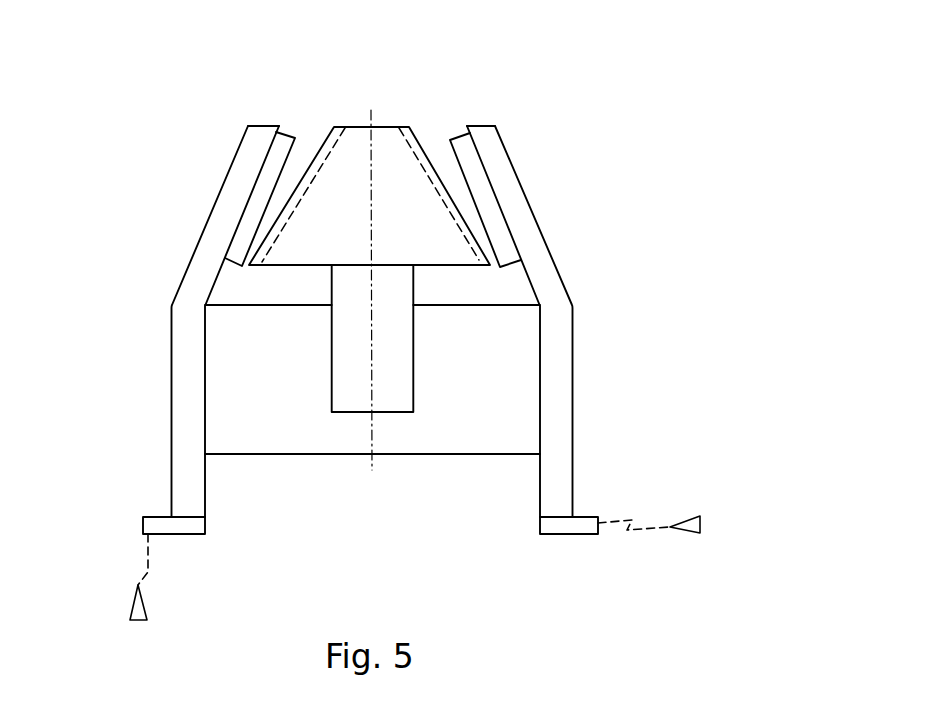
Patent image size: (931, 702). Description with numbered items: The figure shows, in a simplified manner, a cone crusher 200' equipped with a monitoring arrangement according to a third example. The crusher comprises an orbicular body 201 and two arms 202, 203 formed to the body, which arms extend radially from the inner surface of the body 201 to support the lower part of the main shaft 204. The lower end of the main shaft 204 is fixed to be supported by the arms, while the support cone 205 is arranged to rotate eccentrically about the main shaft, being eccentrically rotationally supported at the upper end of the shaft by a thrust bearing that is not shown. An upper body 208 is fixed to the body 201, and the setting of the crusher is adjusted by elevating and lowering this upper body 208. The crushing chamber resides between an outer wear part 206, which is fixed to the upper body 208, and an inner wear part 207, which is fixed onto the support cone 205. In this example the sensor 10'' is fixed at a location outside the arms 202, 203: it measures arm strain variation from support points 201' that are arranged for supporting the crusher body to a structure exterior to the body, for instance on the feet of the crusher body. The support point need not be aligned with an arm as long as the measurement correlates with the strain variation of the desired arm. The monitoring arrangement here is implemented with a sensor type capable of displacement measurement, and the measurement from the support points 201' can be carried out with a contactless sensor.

The cone crusher 200' is at (403, 326).
The body 201 is at (561, 321).
The support points 201' is at (415, 564).
The arm 202 is at (210, 407).
The arm 203 is at (498, 383).
The main shaft 204 is at (390, 288).
The support cone 205 is at (418, 180).
The outer wear part 206 is at (487, 202).
The inner wear part 207 is at (418, 180).
The upper body 208 is at (507, 177).
The sensor 10'' is at (441, 568).